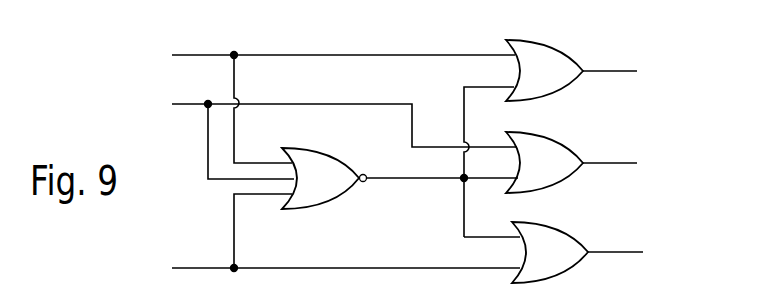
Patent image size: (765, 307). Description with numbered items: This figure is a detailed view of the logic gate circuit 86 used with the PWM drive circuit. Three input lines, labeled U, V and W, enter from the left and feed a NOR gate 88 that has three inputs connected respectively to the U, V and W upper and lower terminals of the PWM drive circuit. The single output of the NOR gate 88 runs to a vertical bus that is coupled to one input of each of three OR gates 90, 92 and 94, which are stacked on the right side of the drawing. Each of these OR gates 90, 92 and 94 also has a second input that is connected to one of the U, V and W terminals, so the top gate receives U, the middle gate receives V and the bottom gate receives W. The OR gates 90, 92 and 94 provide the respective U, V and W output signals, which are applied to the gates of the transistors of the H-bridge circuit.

The logic gate circuit 86 is at (412, 36).
The NOR gate 88 is at (318, 209).
The OR gate 90 is at (585, 34).
The OR gate 92 is at (592, 124).
The OR gate 94 is at (596, 214).